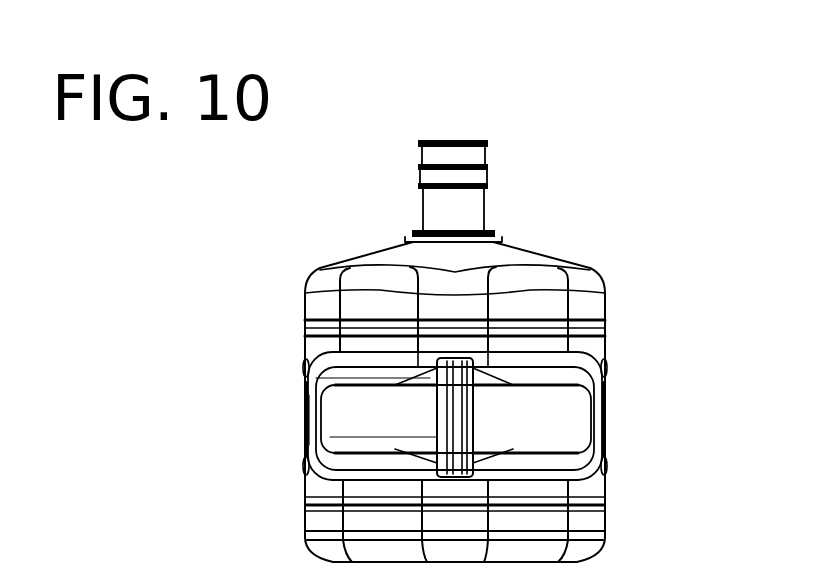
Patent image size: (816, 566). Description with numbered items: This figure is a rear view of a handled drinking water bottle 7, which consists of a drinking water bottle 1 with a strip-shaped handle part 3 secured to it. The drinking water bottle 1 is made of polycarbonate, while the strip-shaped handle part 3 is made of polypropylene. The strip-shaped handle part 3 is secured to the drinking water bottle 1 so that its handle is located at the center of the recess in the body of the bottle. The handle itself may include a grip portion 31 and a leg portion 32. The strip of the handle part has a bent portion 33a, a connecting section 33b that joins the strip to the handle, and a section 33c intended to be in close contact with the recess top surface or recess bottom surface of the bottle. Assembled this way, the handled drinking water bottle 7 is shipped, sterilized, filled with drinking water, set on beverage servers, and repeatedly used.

The handled drinking water bottle 7 is at (443, 351).
The drinking water bottle 1 is at (443, 380).
The strip-shaped handle part 3 is at (443, 416).
The grip portion 31 is at (462, 429).
The leg portion 32 is at (607, 465).
The bent portion 33a is at (306, 420).
The connecting section of strip to handle 33b is at (378, 437).
The section of strip in close contact with recess top or bottom surface 33c is at (418, 379).